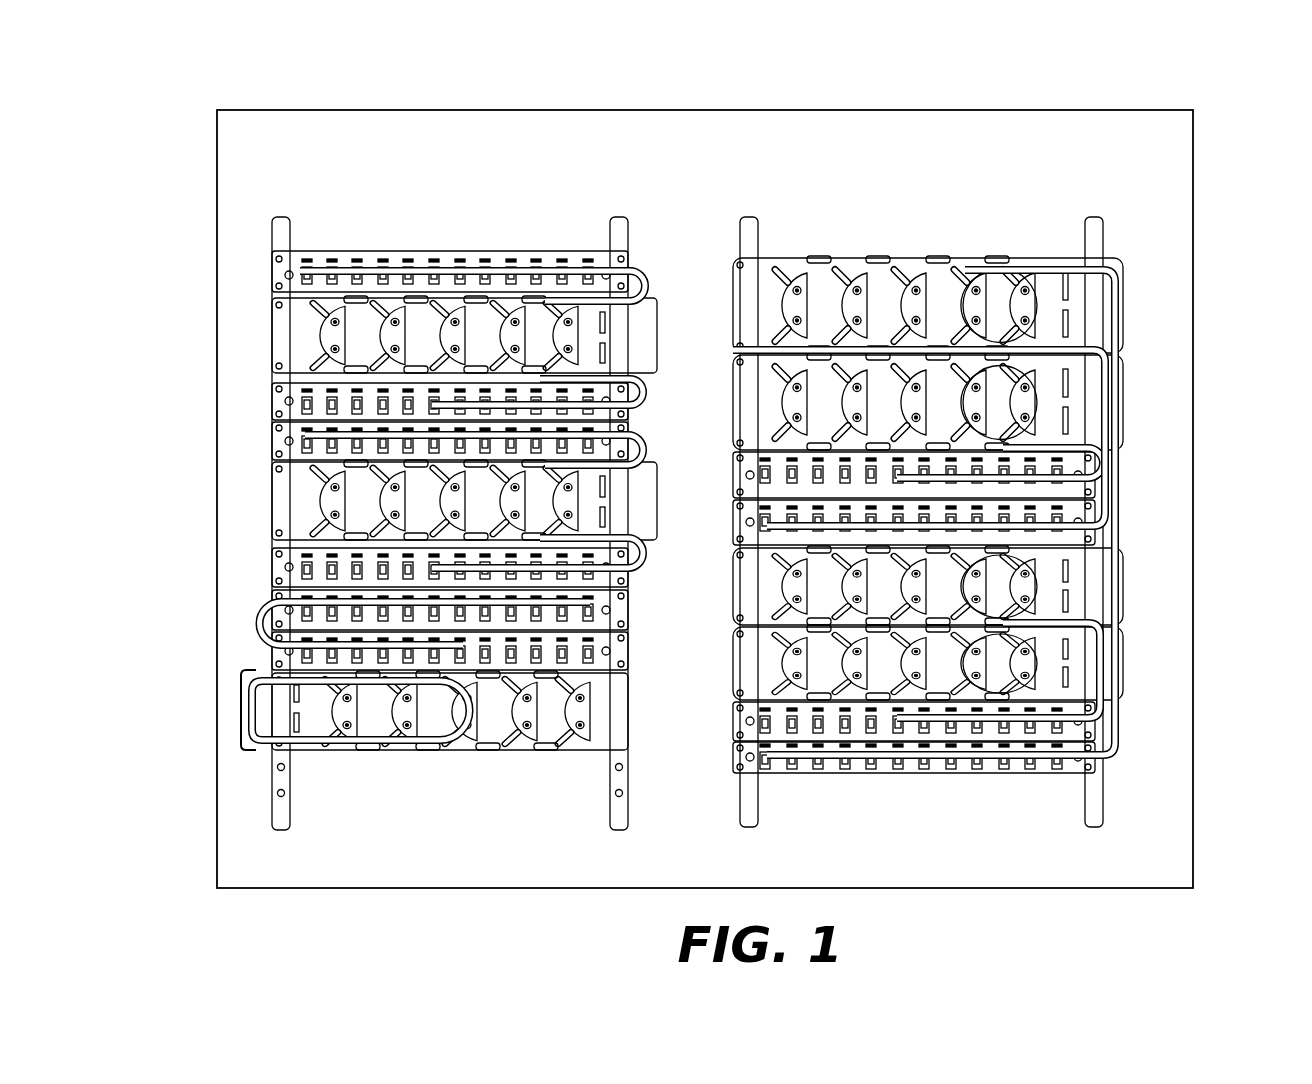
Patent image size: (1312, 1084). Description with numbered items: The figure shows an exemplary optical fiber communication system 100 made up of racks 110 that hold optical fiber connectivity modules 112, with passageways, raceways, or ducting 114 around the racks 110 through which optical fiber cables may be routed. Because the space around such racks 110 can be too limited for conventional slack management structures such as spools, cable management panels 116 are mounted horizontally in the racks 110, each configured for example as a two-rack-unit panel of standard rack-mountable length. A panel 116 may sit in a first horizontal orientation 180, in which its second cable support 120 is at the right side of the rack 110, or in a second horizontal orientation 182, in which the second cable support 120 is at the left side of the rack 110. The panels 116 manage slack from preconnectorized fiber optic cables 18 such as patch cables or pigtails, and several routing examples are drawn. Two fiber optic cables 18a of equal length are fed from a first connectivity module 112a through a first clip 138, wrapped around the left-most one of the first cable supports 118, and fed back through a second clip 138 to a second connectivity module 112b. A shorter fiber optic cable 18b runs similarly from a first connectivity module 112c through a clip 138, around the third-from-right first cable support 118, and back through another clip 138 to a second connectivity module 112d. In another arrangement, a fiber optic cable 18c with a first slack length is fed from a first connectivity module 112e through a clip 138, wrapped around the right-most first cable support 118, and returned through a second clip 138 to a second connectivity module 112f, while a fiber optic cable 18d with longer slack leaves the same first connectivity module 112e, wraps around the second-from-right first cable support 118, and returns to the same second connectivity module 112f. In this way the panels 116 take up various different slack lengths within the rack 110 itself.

The optical fiber communication system 100 is at (1035, 72).
The rack 110 is at (262, 222).
The optical fiber connectivity module 112 is at (282, 272).
The first connectivity module 112a is at (628, 418).
The second connectivity module 112b is at (288, 442).
The first connectivity module 112c is at (632, 615).
The second connectivity module 112d is at (632, 668).
The first connectivity module 112e is at (745, 492).
The second connectivity module 112f is at (745, 532).
The passageways, raceways, or ducting 114 is at (228, 657).
The cable management panel 116 is at (290, 330).
The first cable support 118 is at (335, 335).
The second cable support 120 is at (540, 326).
The clip 138 is at (606, 348).
The preconnectorized fiber optic cable 18 is at (256, 622).
The fiber optic cable 18a is at (640, 395).
The fiber optic cable 18b is at (252, 725).
The fiber optic cable 18c is at (1112, 446).
The fiber optic cable 18d is at (1122, 528).
The first horizontal orientation 180 is at (256, 365).
The second horizontal orientation 182 is at (238, 700).